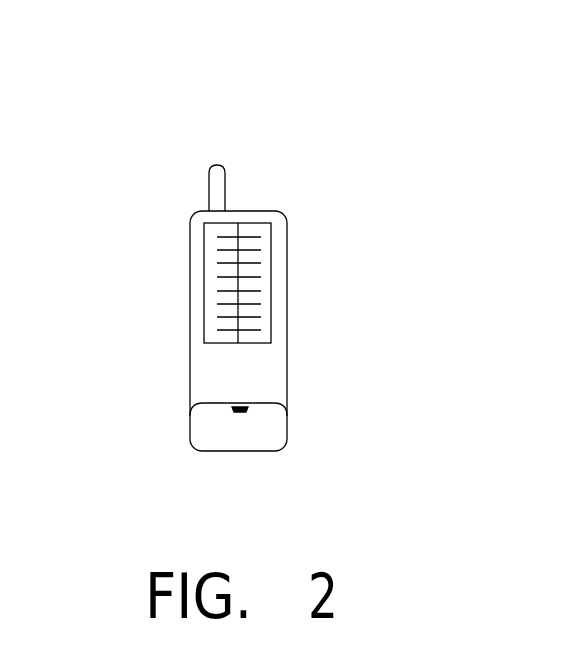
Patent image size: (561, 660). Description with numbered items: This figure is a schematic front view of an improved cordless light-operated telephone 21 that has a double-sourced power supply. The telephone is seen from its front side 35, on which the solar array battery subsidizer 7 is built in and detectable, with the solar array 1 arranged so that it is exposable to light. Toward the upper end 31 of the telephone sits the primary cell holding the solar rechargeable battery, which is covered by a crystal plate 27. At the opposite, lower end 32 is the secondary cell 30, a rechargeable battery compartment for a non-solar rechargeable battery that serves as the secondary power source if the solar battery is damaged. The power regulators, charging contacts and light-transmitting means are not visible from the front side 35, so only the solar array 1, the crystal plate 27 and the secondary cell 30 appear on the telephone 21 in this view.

The solar array 1 is at (274, 247).
The solar array battery subsidizer 7 is at (246, 222).
The light-operated telephone 21 is at (322, 384).
The crystal plate 27 is at (268, 317).
The secondary cell 30 is at (272, 438).
The upper end 31 is at (234, 222).
The lower end 32 is at (233, 433).
The front side 35 is at (270, 382).